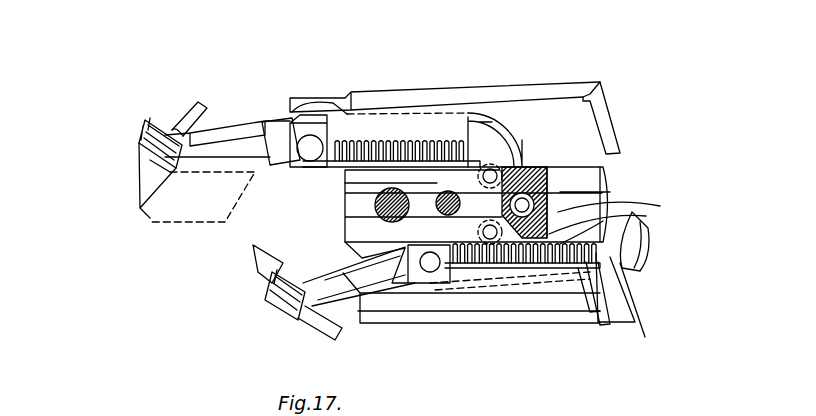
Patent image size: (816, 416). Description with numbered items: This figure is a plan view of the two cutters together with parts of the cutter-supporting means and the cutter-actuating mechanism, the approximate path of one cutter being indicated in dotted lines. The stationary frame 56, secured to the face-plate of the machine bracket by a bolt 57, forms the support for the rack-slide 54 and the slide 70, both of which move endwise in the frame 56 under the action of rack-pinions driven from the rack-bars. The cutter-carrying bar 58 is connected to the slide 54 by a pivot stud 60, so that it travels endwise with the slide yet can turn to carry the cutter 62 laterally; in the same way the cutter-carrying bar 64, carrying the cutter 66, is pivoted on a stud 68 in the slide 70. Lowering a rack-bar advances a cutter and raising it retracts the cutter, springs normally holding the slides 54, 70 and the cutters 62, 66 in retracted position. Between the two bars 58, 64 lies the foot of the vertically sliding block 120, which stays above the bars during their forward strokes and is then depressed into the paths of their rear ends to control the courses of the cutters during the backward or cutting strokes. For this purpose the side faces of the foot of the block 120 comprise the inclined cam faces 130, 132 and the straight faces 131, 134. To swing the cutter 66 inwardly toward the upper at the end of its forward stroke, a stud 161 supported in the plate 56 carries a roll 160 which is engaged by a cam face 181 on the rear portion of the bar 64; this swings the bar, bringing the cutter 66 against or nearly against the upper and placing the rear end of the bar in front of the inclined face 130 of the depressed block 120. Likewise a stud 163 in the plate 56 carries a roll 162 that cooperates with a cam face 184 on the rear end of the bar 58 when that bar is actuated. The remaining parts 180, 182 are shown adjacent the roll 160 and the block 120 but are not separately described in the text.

The rack-slide 54 is at (503, 287).
The frame 56 is at (420, 92).
The bolt 57 is at (438, 164).
The cutter-carrying bar 58 is at (340, 285).
The stud 60 is at (428, 266).
The cutter 62 is at (262, 271).
The cutter-carrying bar 64 is at (230, 140).
The cutter 66 is at (137, 185).
The stud 68 is at (293, 123).
The slide 70 is at (376, 130).
The block 120 is at (588, 180).
The inclined cam face 130 is at (605, 194).
The straight face 131 is at (580, 157).
The inclined cam face 132 is at (659, 208).
The straight face 134 is at (649, 241).
The roll 160 is at (492, 172).
The stud 161 is at (489, 170).
The roll 162 is at (505, 232).
The stud 163 is at (484, 232).
The spring hood 180 is at (492, 172).
The cam face 181 is at (491, 170).
The arcuate guide 182 is at (647, 230).
The cam face 184 is at (618, 232).